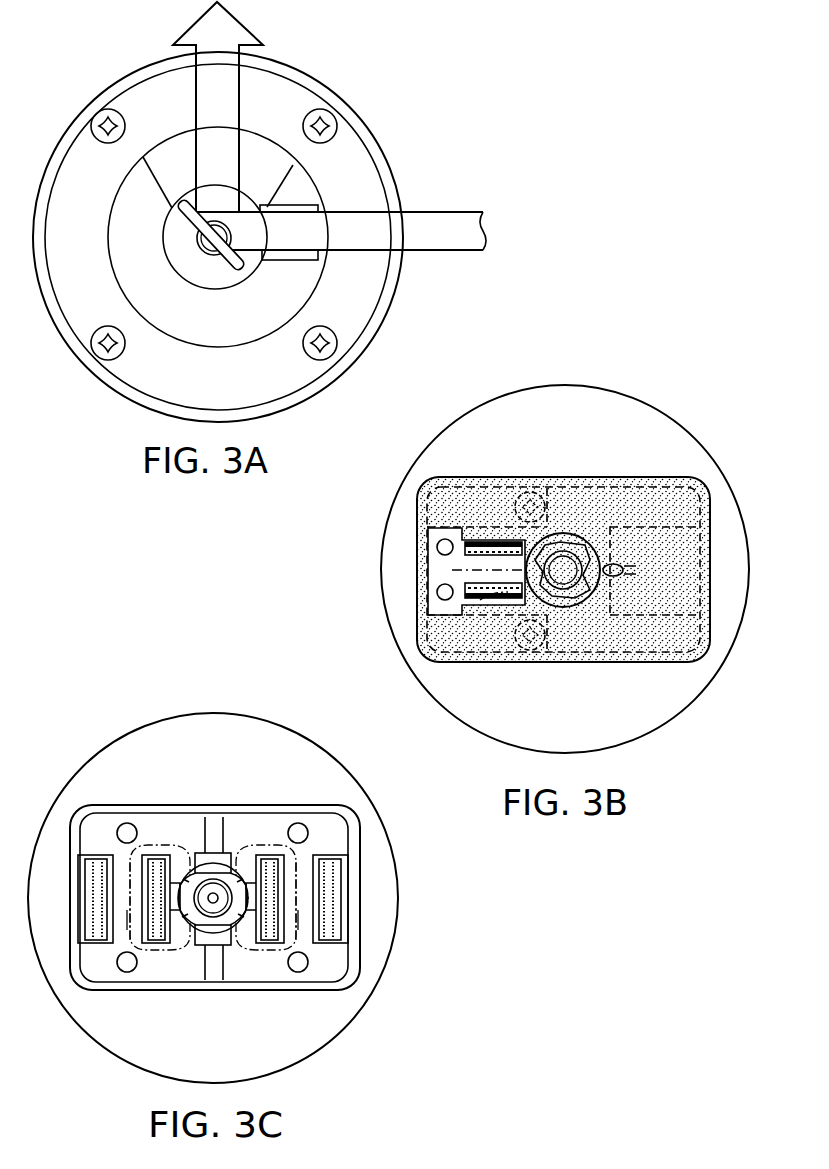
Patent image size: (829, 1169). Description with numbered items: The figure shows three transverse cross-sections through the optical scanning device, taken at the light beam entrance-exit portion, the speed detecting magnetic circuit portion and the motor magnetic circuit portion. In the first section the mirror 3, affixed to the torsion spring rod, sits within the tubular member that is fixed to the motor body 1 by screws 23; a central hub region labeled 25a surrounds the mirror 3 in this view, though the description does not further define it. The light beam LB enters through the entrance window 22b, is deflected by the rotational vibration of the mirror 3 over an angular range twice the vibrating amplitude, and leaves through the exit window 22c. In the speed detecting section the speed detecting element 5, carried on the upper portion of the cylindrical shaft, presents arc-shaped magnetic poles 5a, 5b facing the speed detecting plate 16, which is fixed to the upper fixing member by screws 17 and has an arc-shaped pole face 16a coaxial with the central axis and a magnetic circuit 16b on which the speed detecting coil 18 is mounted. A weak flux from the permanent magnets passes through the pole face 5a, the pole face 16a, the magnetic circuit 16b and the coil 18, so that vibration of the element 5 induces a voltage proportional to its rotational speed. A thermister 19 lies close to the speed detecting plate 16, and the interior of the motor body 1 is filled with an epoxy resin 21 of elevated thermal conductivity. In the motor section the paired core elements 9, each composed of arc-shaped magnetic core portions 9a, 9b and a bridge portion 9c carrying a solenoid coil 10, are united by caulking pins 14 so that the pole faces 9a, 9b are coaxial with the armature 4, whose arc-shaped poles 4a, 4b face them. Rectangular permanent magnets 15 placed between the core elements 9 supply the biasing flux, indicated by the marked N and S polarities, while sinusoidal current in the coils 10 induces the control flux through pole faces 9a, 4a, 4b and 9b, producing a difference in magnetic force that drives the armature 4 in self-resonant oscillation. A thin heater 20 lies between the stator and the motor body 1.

In FIG. 3A, the exit window 22c is at (277, 132).
In FIG. 3A, the entrance window 22b is at (325, 203).
In FIG. 3A, the light beam LB is at (433, 203).
In FIG. 3A, the hub 25a is at (170, 232).
In FIG. 3A, the mirror 3 is at (233, 260).
In FIG. 3A, the screws 23 is at (305, 348).
In FIG. 3B, the motor body 1 is at (723, 502).
In FIG. 3C, the motor body 1 is at (123, 748).
In FIG. 3B, the magnetic circuit 16b is at (477, 563).
In FIG. 3B, the pole face 16a is at (552, 543).
In FIG. 3B, the speed detecting element 5 is at (570, 550).
In FIG. 3B, the magnetic pole 5b is at (588, 559).
In FIG. 3B, the speed detecting plate 16 is at (437, 570).
In FIG. 3B, the epoxy resin 21 is at (697, 580).
In FIG. 3B, the thermister 19 is at (614, 576).
In FIG. 3B, the speed detecting coil 18 is at (480, 597).
In FIG. 3B, the magnetic pole 5a is at (550, 592).
In FIG. 3B, the screws 17 is at (517, 642).
In FIG. 3C, the caulking pins 14 is at (123, 824).
In FIG. 3C, the permanent magnets 15 is at (215, 818).
In FIG. 3C, the magnetic pole 4a is at (190, 867).
In FIG. 3C, the magnetic pole 4b is at (232, 867).
In FIG. 3C, the magnetic core portion 9b is at (247, 867).
In FIG. 3C, the solenoid coils 10 is at (97, 867).
In FIG. 3C, the magnetic core portion 9a is at (187, 867).
In FIG. 3C, the south pole S is at (210, 898).
In FIG. 3C, the north pole N is at (218, 898).
In FIG. 3C, the armature 4 is at (243, 890).
In FIG. 3C, the bridge portion 9c is at (125, 913).
In FIG. 3C, the core elements 9 is at (103, 973).
In FIG. 3C, the heater 20 is at (355, 965).